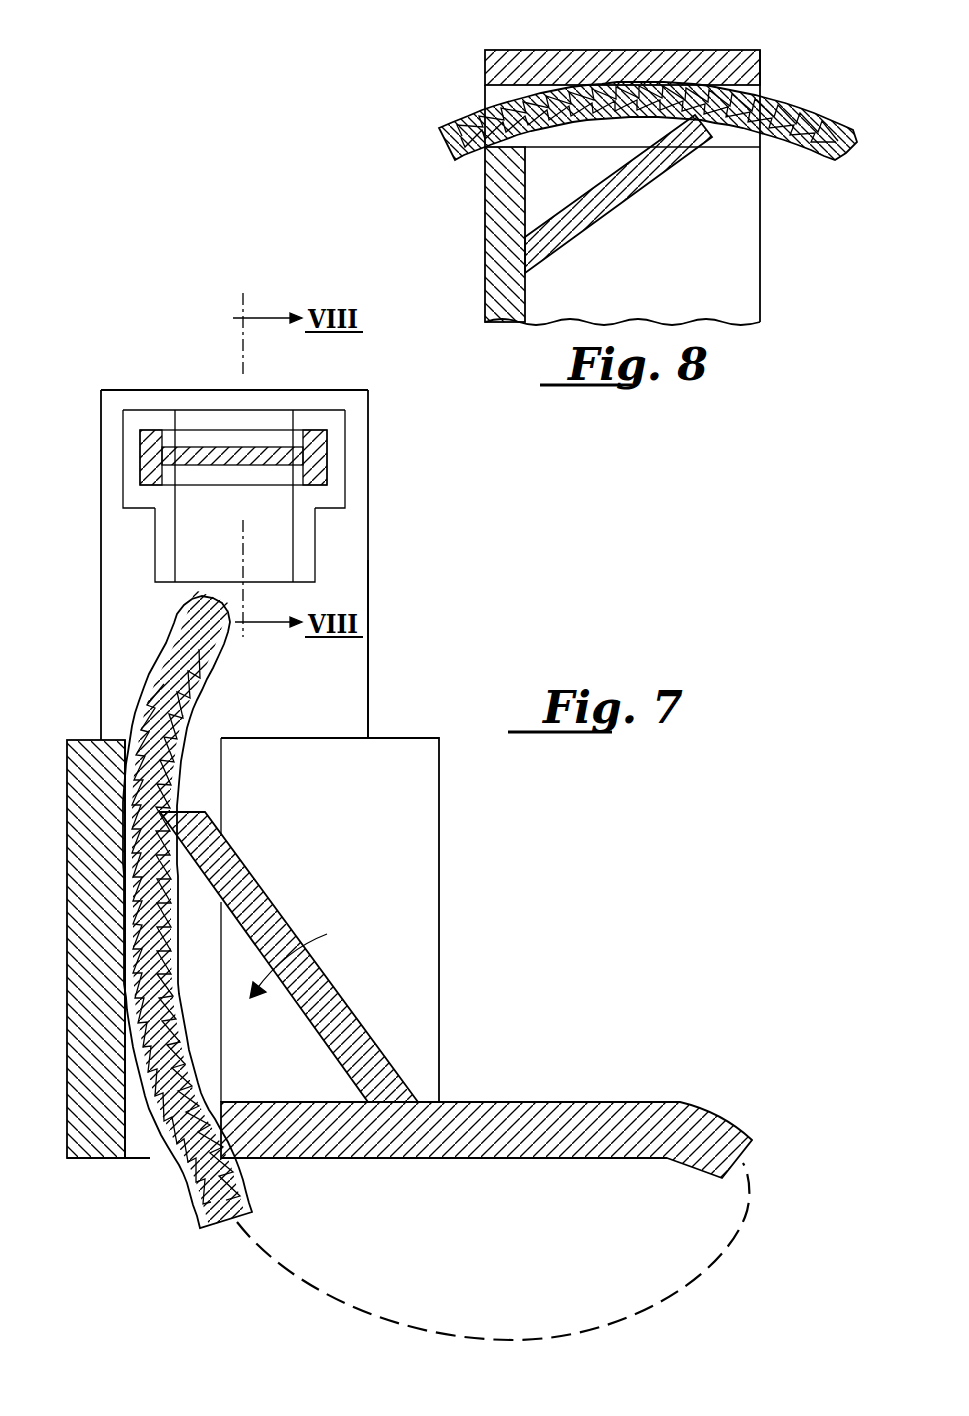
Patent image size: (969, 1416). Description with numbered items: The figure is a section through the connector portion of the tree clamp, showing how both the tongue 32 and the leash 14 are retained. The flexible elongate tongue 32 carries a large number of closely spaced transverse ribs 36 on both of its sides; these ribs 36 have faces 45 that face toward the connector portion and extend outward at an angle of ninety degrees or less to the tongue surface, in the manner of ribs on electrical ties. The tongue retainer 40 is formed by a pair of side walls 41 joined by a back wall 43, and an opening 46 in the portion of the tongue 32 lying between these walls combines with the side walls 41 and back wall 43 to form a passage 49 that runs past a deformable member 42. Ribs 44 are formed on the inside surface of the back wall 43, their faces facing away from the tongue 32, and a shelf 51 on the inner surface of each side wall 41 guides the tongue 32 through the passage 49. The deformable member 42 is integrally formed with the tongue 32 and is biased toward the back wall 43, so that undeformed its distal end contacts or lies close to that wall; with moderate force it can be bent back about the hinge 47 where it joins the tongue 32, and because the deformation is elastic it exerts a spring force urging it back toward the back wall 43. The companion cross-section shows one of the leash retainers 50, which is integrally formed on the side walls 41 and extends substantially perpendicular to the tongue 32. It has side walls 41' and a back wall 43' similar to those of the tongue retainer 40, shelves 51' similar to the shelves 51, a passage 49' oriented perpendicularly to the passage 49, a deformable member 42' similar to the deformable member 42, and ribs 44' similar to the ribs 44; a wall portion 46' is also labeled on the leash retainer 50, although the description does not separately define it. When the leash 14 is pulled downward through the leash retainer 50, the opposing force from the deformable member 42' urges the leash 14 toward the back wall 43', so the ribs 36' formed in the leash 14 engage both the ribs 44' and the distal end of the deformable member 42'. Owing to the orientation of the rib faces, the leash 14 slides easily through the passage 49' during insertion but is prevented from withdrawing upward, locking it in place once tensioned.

In FIG. 7, the leash 14 is at (328, 462).
In FIG. 8, the leash 14 is at (813, 152).
In FIG. 7, the tongue 32 is at (218, 647).
In FIG. 7, the ribs 36 is at (142, 944).
In FIG. 7, the ribs 36' is at (248, 451).
In FIG. 8, the ribs 36' is at (648, 153).
In FIG. 7, the retainer 40 is at (443, 958).
In FIG. 7, the side walls 41 is at (356, 794).
In FIG. 7, the side walls 41' is at (242, 565).
In FIG. 8, the side walls 41' is at (654, 262).
In FIG. 7, the deformable member 42 is at (289, 957).
In FIG. 7, the deformable member 42' is at (287, 545).
In FIG. 8, the deformable member 42' is at (618, 195).
In FIG. 7, the back wall 43 is at (76, 949).
In FIG. 7, the back wall 43' is at (230, 360).
In FIG. 8, the back wall 43' is at (622, 46).
In FIG. 7, the ribs 44 is at (85, 949).
In FIG. 7, the ribs 44' is at (234, 458).
In FIG. 8, the ribs 44' is at (647, 73).
In FIG. 7, the faces 45 is at (148, 695).
In FIG. 7, the opening 46 is at (108, 1190).
In FIG. 8, the side wall 46' is at (462, 193).
In FIG. 7, the hinge 47 is at (441, 1074).
In FIG. 7, the passage 49 is at (254, 786).
In FIG. 7, the passage 49' is at (367, 444).
In FIG. 8, the passage 49' is at (642, 188).
In FIG. 7, the leash retainer 50 is at (370, 600).
In FIG. 8, the leash retainer 50 is at (757, 50).
In FIG. 7, the shelf 51 is at (254, 1002).
In FIG. 7, the shelves 51' is at (108, 483).